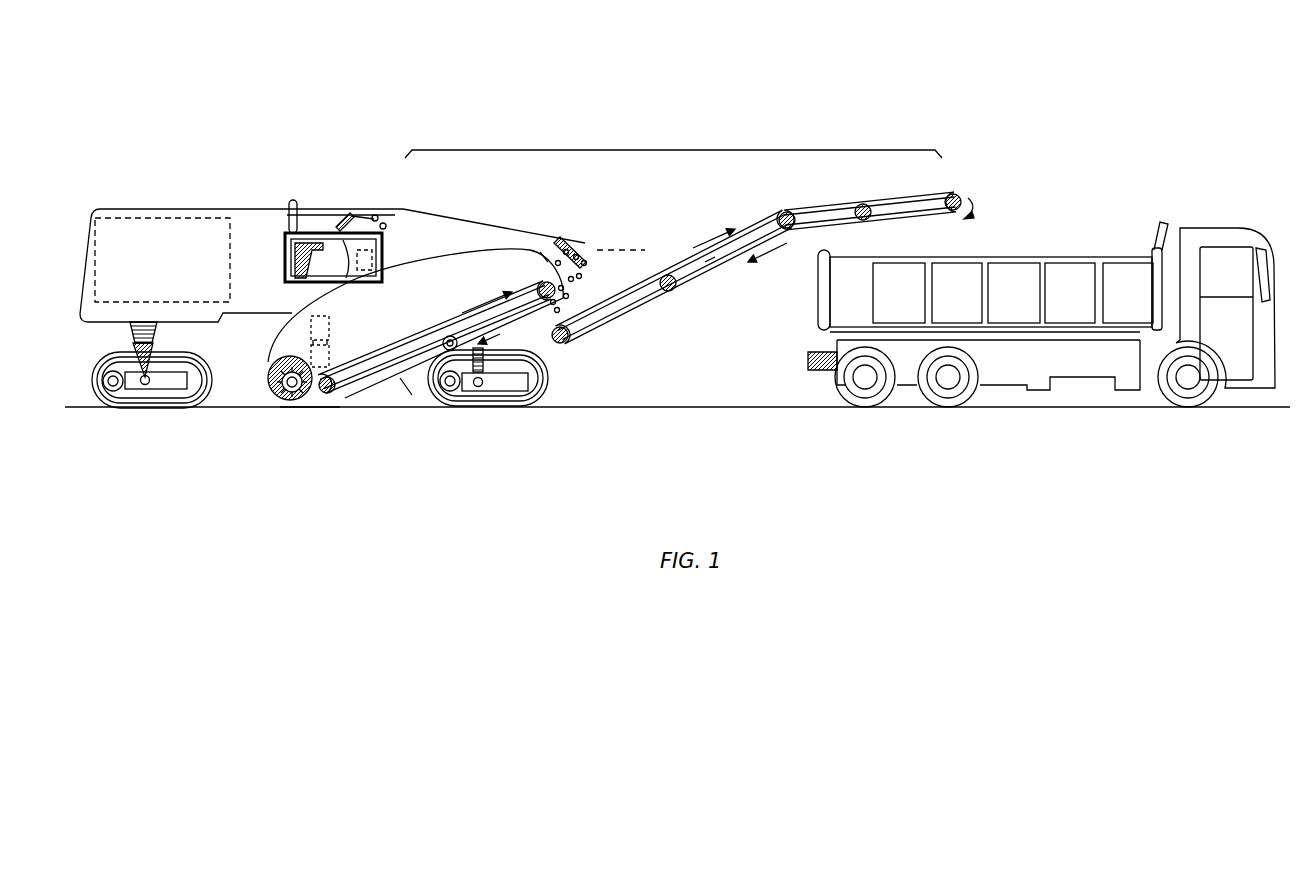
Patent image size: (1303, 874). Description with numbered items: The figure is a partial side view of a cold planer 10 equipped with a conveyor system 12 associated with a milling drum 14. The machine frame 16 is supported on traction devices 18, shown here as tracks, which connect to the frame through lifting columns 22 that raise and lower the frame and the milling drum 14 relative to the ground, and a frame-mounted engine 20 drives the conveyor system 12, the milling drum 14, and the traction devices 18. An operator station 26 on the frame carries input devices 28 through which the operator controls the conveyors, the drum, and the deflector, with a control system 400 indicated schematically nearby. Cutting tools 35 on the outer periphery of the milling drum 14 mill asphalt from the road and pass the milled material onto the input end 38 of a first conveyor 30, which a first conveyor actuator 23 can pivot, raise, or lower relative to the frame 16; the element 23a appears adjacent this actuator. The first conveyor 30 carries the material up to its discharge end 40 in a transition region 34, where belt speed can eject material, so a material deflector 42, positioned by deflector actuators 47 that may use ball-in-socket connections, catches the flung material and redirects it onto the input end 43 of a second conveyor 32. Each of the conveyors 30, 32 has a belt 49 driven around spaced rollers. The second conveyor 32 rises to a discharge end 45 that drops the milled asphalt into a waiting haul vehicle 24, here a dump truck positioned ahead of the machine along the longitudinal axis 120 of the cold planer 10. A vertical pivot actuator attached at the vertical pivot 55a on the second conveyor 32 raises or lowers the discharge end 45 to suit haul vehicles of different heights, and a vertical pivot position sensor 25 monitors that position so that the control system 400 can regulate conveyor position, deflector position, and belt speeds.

The cold planer 10 is at (558, 86).
The conveyor system 12 is at (670, 150).
The milling drum 14 is at (300, 410).
The machine frame 16 is at (402, 206).
The traction devices 18 is at (212, 410).
The engine 20 is at (118, 216).
The lifting columns 22 is at (130, 353).
The first conveyor actuator 23 is at (303, 353).
The suction opening 23a is at (305, 320).
The haul vehicle 24 is at (1044, 213).
The vertical pivot position sensor 25 is at (327, 345).
The operator station 26 is at (290, 168).
The input devices 28 is at (340, 210).
The first conveyor 30 is at (425, 342).
The second conveyor 32 is at (620, 308).
The transition region 34 is at (637, 265).
The cutting tools 35 is at (312, 410).
The input end 38 is at (326, 377).
The discharge end 40 is at (528, 281).
The material deflector 42 is at (601, 252).
The input end 43 is at (564, 317).
The discharge end 45 is at (963, 188).
The deflector actuators 47 is at (582, 255).
The belt 49 is at (412, 395).
The vertical pivot 55a is at (668, 285).
The longitudinal axis 120 is at (542, 252).
The control system 400 is at (374, 260).